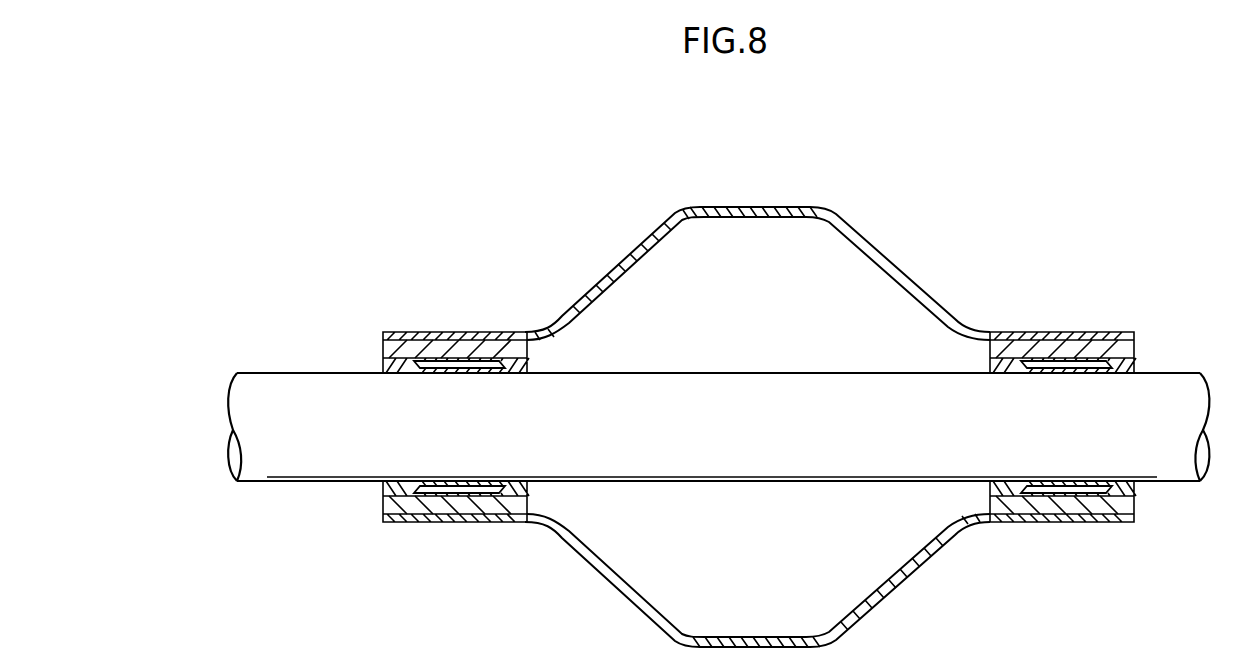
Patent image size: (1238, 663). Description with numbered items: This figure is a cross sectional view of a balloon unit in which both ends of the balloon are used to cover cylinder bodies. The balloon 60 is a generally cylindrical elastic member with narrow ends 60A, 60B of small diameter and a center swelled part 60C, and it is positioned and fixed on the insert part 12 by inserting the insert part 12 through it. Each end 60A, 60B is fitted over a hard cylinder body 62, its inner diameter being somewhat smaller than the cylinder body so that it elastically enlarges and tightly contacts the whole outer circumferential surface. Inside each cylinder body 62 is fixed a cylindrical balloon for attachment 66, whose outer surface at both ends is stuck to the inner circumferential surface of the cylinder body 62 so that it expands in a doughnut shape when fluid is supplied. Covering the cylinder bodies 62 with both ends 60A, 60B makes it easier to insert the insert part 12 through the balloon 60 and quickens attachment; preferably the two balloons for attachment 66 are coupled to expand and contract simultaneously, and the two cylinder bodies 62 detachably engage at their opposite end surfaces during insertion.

The insert part 12 is at (307, 470).
The balloon 60 is at (751, 380).
The end 60A is at (398, 332).
The end 60B is at (1046, 332).
The center swelled part 60C is at (760, 207).
The cylinder body 62 is at (470, 345).
The balloon for attachment 66 is at (460, 370).